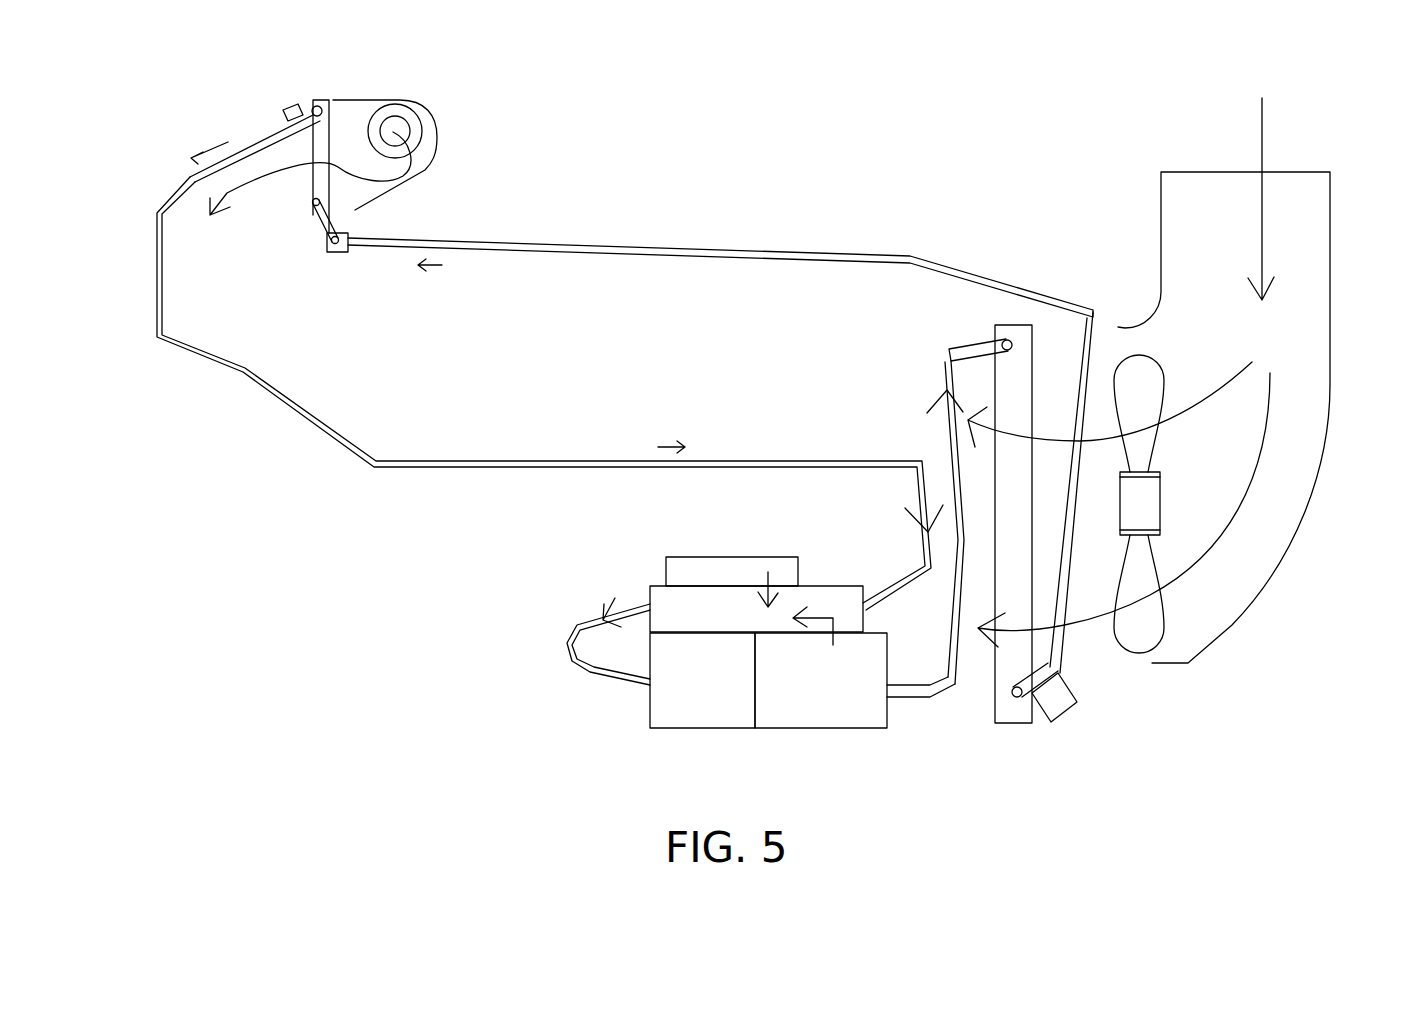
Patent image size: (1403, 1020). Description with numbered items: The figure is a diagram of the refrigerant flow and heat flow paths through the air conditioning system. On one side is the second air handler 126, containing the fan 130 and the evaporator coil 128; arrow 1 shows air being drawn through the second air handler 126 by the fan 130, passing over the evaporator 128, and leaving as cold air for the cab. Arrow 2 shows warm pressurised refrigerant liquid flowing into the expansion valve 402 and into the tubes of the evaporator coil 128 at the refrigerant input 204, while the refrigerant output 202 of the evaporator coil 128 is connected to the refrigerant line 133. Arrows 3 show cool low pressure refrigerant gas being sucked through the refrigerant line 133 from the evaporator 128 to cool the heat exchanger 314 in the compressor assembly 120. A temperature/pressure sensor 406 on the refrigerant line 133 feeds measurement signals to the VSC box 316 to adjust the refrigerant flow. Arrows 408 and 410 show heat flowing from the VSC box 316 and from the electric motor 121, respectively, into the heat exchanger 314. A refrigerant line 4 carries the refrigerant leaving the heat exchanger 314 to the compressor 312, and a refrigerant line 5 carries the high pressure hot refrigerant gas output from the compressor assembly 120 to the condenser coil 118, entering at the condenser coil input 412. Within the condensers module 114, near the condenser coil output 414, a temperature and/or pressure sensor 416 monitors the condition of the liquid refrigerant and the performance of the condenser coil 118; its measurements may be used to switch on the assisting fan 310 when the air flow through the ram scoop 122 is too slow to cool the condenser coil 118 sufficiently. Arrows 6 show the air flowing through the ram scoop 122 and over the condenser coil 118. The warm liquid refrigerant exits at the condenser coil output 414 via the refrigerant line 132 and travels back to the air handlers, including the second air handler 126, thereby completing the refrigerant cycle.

The arrow 1 is at (302, 186).
The arrow 2 is at (446, 267).
The arrows 3 is at (426, 301).
The refrigerant line 4 is at (567, 648).
The refrigerant line 5 is at (953, 638).
The arrows 6 is at (1262, 214).
The condensers module 114 is at (655, 770).
The condenser coil 118 is at (1032, 348).
The compressor assembly 120 is at (892, 708).
The electric motor 121 is at (821, 680).
The ram scoop 122 is at (1280, 547).
The second air handler 126 is at (427, 78).
The evaporator coil 128 is at (317, 177).
The fan 130 is at (393, 130).
The refrigerant line 132 is at (558, 252).
The refrigerant line 133 is at (400, 461).
The refrigerant output 202 is at (313, 108).
The refrigerant input 204 is at (317, 173).
The assisting fan 310 is at (1155, 437).
The compressor 312 is at (702, 680).
The heat exchanger 314 is at (756, 609).
The VSC box 316 is at (732, 571).
The expansion valve 402 is at (350, 234).
The temperature/pressure sensor 406 is at (282, 110).
The arrow 408 is at (770, 580).
The arrow 410 is at (825, 612).
The condenser coil input 412 is at (995, 343).
The condenser coil output 414 is at (1012, 700).
The temperature and/or pressure sensor 416 is at (1080, 705).